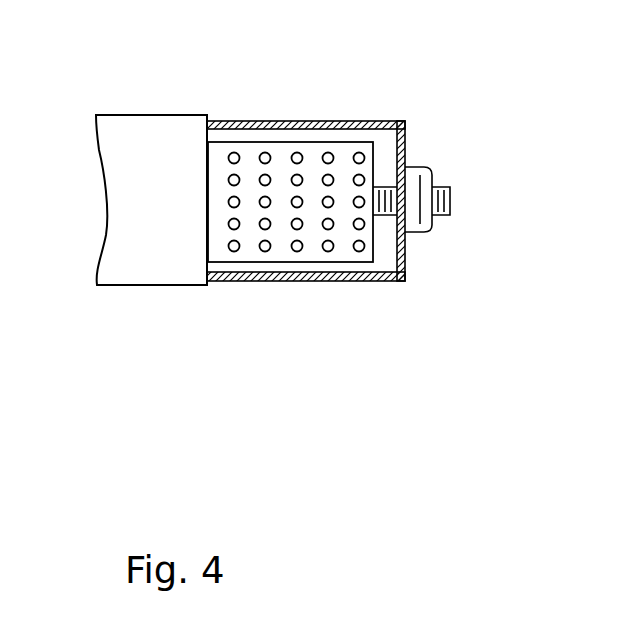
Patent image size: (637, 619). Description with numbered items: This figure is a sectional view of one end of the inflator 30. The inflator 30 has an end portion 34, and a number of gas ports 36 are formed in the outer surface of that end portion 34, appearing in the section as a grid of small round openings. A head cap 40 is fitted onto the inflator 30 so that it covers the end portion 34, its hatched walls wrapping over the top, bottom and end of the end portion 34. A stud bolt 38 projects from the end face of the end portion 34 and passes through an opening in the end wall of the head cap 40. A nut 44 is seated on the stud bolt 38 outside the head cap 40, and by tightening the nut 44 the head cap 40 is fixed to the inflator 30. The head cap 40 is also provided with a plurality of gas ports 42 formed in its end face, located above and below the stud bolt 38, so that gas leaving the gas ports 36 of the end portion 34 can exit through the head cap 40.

The inflator 30 is at (164, 105).
The end portion 34 is at (323, 142).
The gas ports 36 is at (234, 252).
The stud bolt 38 is at (450, 194).
The head cap 40 is at (379, 282).
The gas ports 42 is at (406, 144).
The nut 44 is at (416, 167).